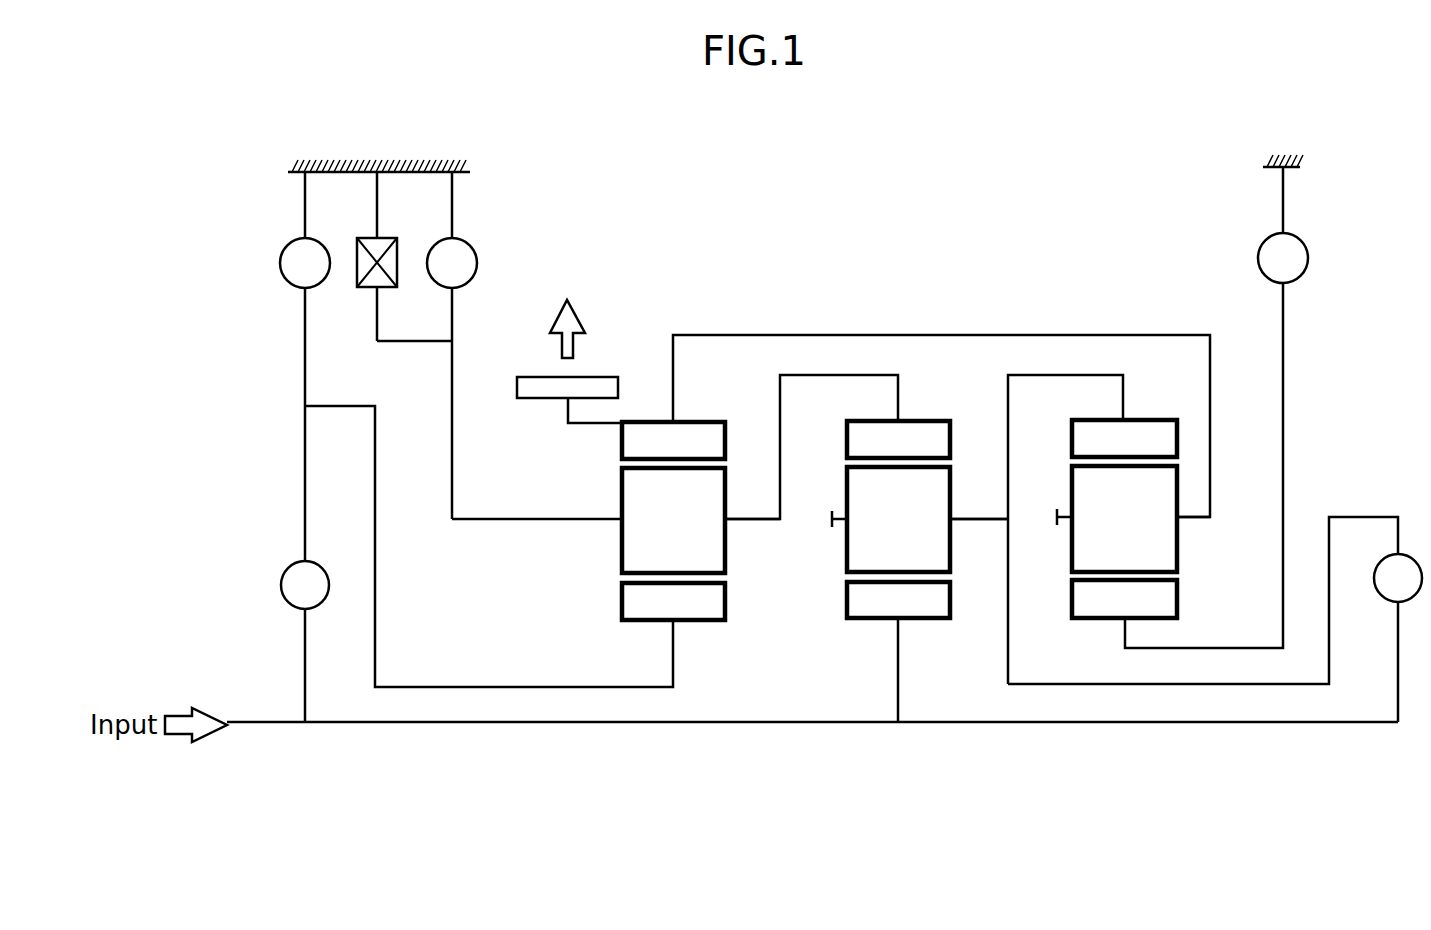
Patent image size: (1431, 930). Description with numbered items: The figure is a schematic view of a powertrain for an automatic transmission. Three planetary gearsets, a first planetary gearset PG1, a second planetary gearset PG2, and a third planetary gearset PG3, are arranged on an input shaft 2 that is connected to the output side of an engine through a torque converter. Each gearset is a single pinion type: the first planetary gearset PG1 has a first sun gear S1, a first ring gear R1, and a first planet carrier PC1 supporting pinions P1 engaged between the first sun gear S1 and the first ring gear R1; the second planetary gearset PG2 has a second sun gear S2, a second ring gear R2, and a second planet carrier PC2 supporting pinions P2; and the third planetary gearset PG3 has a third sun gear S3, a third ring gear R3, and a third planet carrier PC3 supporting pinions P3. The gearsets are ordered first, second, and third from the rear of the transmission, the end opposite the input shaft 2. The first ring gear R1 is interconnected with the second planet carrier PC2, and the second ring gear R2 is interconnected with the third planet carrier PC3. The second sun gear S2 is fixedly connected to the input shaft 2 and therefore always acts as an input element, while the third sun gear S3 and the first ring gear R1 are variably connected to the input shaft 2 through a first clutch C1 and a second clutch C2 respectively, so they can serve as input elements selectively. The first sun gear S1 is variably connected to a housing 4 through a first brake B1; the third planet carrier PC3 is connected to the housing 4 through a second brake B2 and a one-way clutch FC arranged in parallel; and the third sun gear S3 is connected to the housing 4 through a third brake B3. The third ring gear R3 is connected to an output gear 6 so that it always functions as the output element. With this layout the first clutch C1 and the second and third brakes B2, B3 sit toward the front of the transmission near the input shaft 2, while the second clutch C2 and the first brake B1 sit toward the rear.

The input shaft 2 is at (792, 724).
The housing 4 is at (1285, 150).
The output gear 6 is at (604, 377).
The one-way clutch FC is at (357, 273).
The first brake B1 is at (1283, 258).
The second brake B2 is at (452, 263).
The third brake B3 is at (305, 263).
The first clutch C1 is at (305, 585).
The second clutch C2 is at (1398, 578).
The first planetary gearset PG1 is at (1147, 613).
The second planetary gearset PG2 is at (927, 613).
The third planetary gearset PG3 is at (706, 614).
The first ring gear R1 is at (1124, 438).
The second ring gear R2 is at (898, 439).
The third ring gear R3 is at (673, 440).
The pinions P1 is at (1124, 519).
The pinions P2 is at (898, 519).
The pinions P3 is at (673, 520).
The first sun gear S1 is at (1124, 599).
The second sun gear S2 is at (898, 600).
The third sun gear S3 is at (673, 601).
The first planet carrier PC1 is at (1203, 561).
The second planet carrier PC2 is at (978, 523).
The third planet carrier PC3 is at (755, 523).